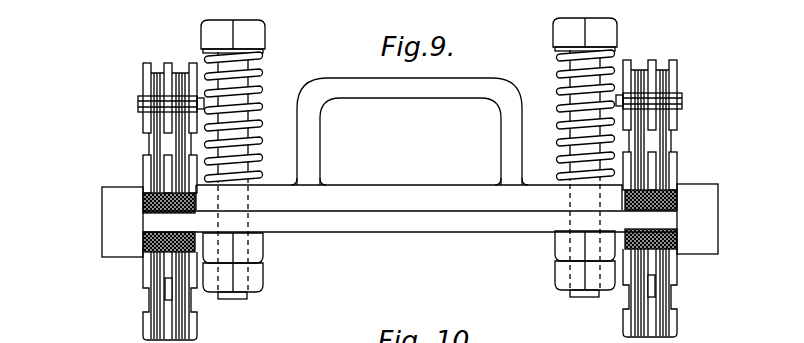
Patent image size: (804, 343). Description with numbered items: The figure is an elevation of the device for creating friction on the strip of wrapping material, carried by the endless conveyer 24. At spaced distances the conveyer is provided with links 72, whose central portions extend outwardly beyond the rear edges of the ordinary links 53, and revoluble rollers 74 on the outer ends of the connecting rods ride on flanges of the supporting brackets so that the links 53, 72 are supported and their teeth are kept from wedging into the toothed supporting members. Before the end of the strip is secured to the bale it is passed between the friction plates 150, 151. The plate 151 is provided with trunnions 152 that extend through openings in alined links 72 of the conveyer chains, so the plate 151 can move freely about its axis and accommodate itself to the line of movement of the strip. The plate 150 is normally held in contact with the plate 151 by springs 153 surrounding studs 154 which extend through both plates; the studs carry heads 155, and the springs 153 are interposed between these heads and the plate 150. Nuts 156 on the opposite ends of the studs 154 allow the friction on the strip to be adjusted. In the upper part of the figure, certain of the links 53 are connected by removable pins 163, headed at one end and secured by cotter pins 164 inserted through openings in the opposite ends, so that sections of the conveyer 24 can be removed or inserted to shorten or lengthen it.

The endless conveyer 24 is at (142, 73).
The links 53 is at (148, 138).
The links 72 is at (183, 222).
The revoluble rollers 74 is at (103, 212).
The friction plate 150 is at (377, 190).
The friction plate 151 is at (398, 228).
The trunnions 152 is at (167, 252).
The springs 153 is at (257, 83).
The studs 154 is at (218, 63).
The heads 155 is at (256, 33).
The nuts 156 is at (258, 249).
The removable pins 163 is at (139, 101).
The cotter pins 164 is at (253, 98).